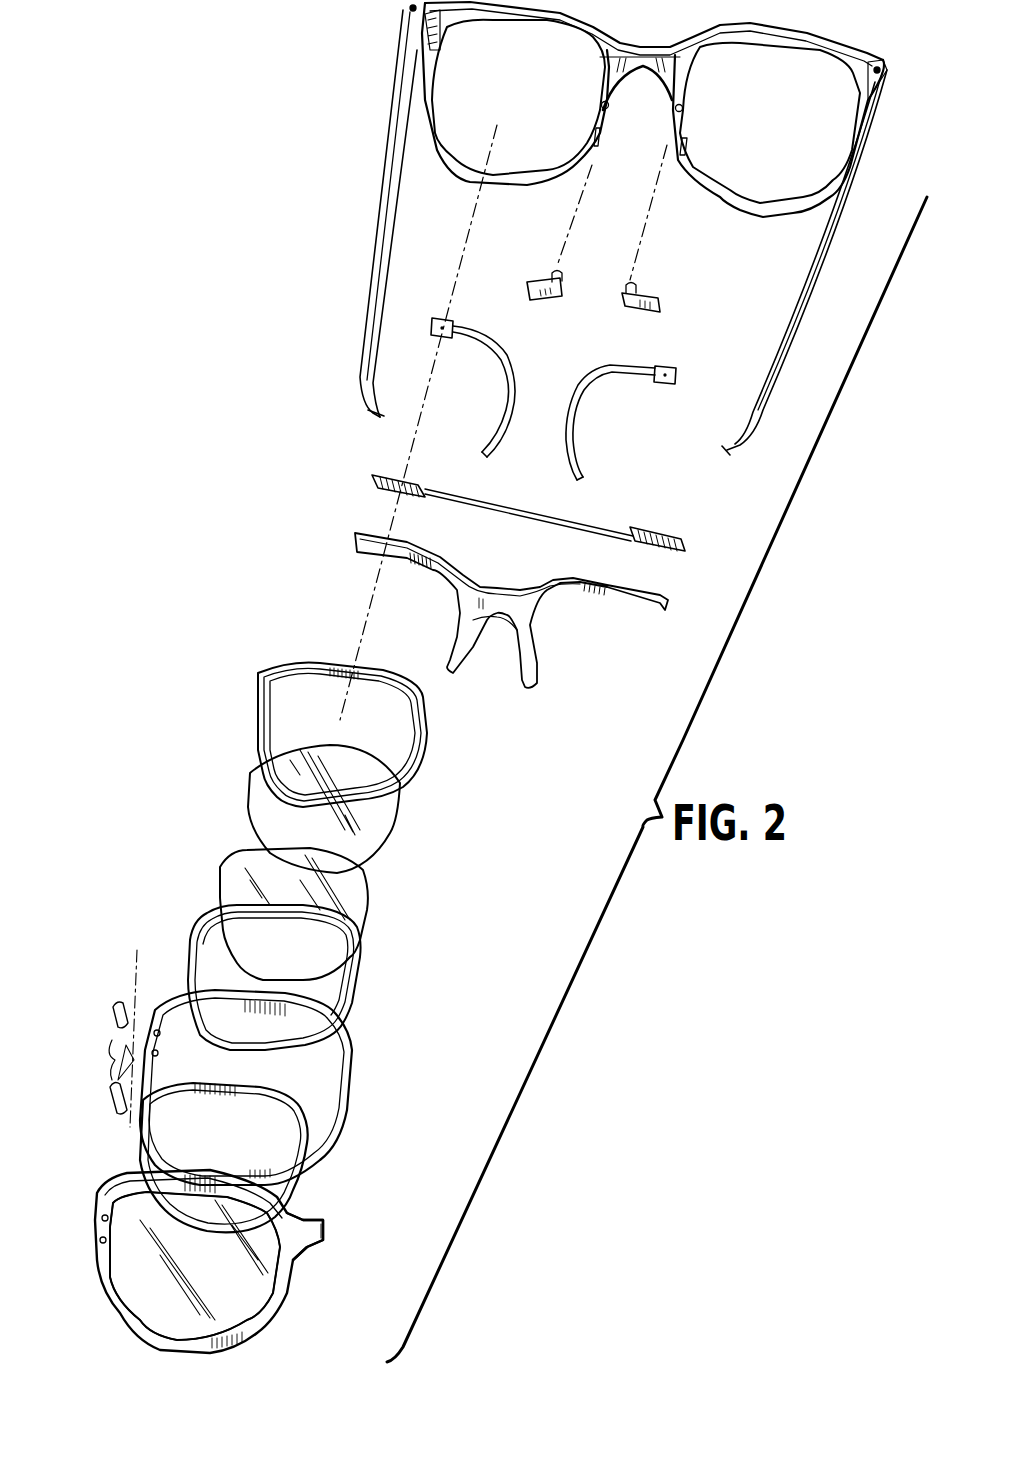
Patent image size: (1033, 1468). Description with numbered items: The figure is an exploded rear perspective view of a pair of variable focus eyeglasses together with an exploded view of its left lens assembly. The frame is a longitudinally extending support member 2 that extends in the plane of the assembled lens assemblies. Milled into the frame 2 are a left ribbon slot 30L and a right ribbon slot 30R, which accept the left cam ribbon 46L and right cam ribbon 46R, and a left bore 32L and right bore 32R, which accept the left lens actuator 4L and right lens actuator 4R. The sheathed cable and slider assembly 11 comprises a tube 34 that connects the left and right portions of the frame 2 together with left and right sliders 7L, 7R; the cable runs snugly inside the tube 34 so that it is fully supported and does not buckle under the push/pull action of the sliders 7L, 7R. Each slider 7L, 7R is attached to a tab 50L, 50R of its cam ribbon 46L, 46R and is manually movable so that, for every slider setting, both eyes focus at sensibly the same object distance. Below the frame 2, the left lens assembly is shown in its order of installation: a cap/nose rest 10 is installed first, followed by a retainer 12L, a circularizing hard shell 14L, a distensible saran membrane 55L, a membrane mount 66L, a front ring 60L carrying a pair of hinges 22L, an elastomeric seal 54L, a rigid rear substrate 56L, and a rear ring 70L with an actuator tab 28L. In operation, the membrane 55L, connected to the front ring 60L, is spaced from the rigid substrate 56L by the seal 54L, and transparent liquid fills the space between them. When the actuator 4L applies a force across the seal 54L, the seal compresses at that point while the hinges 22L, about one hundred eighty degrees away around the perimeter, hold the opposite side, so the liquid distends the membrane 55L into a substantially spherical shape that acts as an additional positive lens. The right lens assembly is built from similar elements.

The longitudinally extending support member 2 is at (470, 185).
The left bore 32L is at (609, 104).
The right bore 32R is at (683, 108).
The left ribbon slot 30L is at (601, 135).
The right ribbon slot 30R is at (688, 145).
The left lens actuator 4L is at (527, 287).
The right lens actuator 4R is at (623, 308).
The left tab 50L is at (440, 317).
The left cam ribbon 46L is at (507, 360).
The right tab 50R is at (676, 373).
The right cam ribbon 46R is at (573, 420).
The sheathed cable and slider assembly 11 is at (588, 512).
The left slider 7L is at (372, 483).
The tube 34 is at (498, 510).
The right slider 7R is at (688, 547).
The cap/nose rest 10 is at (352, 545).
The retainer 12L is at (270, 672).
The circularizing hard shell 14L is at (247, 787).
The distensible saran membrane 55L is at (220, 867).
The membrane mount 66L is at (197, 928).
The hinges 22L is at (102, 1038).
The front ring 60L is at (350, 1060).
The elastomeric seal 54L is at (307, 1180).
The actuator tab 28L is at (330, 1230).
The rigid rear substrate 56L is at (132, 1262).
The rear ring 70L is at (287, 1287).